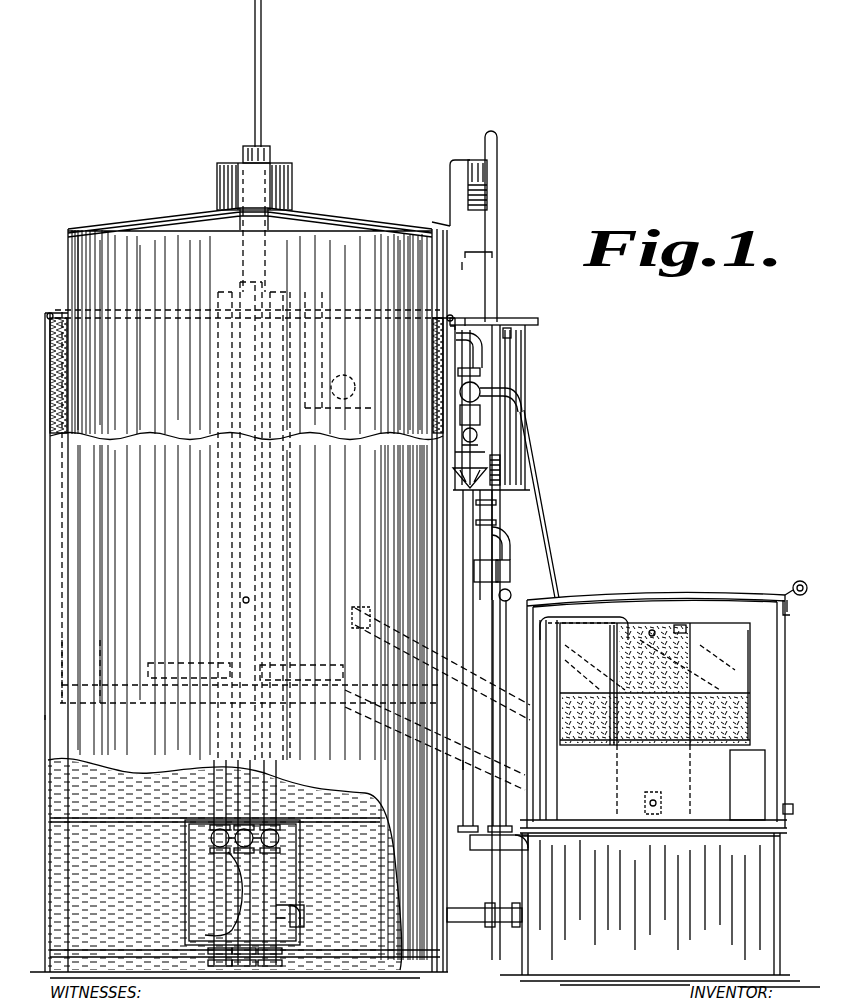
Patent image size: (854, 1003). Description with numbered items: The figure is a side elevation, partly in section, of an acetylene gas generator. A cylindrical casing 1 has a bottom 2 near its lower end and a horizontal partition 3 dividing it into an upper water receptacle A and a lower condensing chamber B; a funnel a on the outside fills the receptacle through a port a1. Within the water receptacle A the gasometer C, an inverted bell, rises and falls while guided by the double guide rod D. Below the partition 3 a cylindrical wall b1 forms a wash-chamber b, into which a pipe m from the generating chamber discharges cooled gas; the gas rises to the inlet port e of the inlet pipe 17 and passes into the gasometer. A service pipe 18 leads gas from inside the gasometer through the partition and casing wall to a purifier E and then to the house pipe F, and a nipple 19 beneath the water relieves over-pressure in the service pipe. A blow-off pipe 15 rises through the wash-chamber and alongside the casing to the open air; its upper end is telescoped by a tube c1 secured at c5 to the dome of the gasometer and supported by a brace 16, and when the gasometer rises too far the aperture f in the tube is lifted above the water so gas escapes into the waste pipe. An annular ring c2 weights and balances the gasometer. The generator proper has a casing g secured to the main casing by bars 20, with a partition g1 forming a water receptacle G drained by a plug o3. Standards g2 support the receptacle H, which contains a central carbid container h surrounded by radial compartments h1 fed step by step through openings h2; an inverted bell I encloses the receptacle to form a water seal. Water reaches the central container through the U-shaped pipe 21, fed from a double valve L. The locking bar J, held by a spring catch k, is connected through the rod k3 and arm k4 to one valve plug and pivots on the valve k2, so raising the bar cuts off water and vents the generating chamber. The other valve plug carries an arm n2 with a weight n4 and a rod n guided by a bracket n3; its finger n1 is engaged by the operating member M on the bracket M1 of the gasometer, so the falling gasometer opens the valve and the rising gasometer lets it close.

The water receptacle A is at (54, 312).
The condensing chamber B is at (150, 925).
The gasometer C is at (167, 245).
The double guide rod D is at (262, 24).
The purifier E is at (526, 390).
The house pipe F is at (500, 155).
The water receptacle G is at (780, 725).
The receptacle H is at (705, 745).
The inverted bell I is at (590, 622).
The locking bar J is at (787, 595).
The double valve L is at (465, 340).
The operating member M is at (466, 182).
The bracket M1 is at (455, 160).
The funnel a is at (332, 368).
The port a1 is at (338, 410).
The wash-chamber b is at (290, 855).
The cylindrical wall b1 is at (190, 874).
The tube c1 is at (242, 255).
The annular ring c2 is at (110, 690).
The tube securing point c5 is at (265, 170).
The inlet port e is at (210, 835).
The aperture f is at (244, 600).
The casing g is at (778, 935).
The partition g1 is at (672, 826).
The standards g2 is at (647, 757).
The central carbid container h is at (668, 622).
The radial compartments h1 is at (650, 665).
The opening h2 is at (687, 625).
The spring catch k is at (787, 612).
The valve k2 is at (508, 593).
The rod k3 is at (540, 527).
The arm k4 is at (517, 409).
The pipe m is at (300, 915).
The rod n is at (500, 302).
The finger n1 is at (463, 270).
The arm n2 is at (458, 312).
The bracket n3 is at (505, 340).
The weight n4 is at (502, 472).
The plug o3 is at (795, 810).
The cylindrical casing 1 is at (52, 717).
The bottom 2 is at (337, 958).
The partition 3 is at (122, 824).
The blow-off pipe 15 is at (275, 290).
The brace 16 is at (175, 672).
The inlet pipe 17 is at (217, 308).
The service pipe 18 is at (285, 302).
The nipple 19 is at (420, 875).
The bars 20 is at (494, 765).
The pipe 21 is at (460, 573).